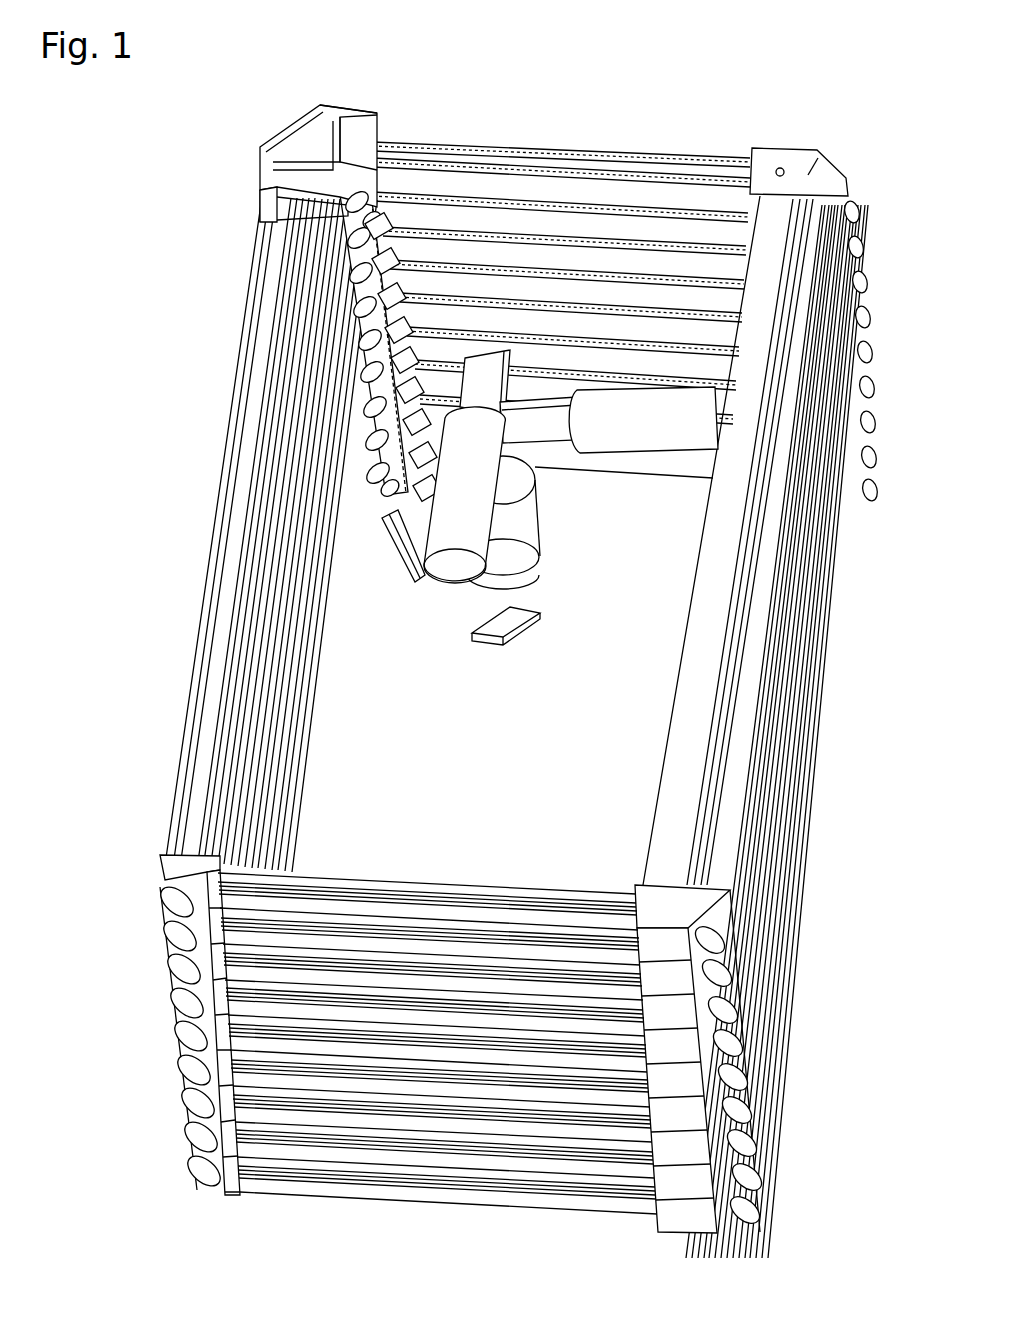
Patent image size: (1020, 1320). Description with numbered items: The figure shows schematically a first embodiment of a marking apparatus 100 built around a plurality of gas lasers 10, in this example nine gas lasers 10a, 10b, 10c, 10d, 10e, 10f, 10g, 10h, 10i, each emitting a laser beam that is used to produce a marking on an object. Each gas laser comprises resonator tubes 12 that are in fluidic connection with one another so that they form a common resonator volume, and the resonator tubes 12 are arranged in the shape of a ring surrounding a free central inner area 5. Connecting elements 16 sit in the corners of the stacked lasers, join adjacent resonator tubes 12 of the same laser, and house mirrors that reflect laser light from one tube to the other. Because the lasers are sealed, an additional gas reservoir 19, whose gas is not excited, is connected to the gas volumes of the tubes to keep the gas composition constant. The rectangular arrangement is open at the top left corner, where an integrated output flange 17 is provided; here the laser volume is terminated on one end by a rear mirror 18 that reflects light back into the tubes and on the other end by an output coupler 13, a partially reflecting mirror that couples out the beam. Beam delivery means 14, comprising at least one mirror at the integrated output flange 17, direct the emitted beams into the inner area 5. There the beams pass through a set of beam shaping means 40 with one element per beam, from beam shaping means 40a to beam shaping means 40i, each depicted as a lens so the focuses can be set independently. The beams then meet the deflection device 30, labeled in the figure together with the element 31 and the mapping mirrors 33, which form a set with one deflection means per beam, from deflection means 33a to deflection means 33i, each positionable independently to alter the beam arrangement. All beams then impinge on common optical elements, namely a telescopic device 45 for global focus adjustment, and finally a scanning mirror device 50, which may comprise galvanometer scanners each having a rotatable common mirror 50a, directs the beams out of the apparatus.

The marking apparatus 100 is at (640, 100).
The inner area 5 is at (494, 748).
The gas lasers 10 is at (389, 1051).
The gas laser 10a is at (153, 903).
The gas laser 10b is at (155, 936).
The gas laser 10c is at (165, 969).
The gas laser 10d is at (165, 1003).
The gas laser 10e is at (167, 1036).
The gas laser 10f is at (170, 1070).
The gas laser 10g is at (170, 1103).
The gas laser 10h is at (172, 1137).
The gas laser 10i is at (428, 1189).
The resonator tubes 12 is at (290, 1188).
The output coupler 13 is at (273, 190).
The beam delivery means 14 is at (311, 119).
The connecting elements 16 is at (817, 148).
The integrated output flange 17 is at (341, 95).
The rear mirror 18 is at (372, 108).
The gas reservoir 19 is at (700, 692).
The deflection device 30 is at (444, 294).
The contact pad 31 is at (444, 294).
The mapping mirrors 33 is at (381, 203).
The deflection means 33a is at (370, 250).
The deflection means 33i is at (372, 478).
The beam shaping means 40 is at (369, 524).
The beam shaping means 40a is at (360, 207).
The beam shaping means 40i is at (372, 492).
The telescopic device 45 is at (512, 530).
The scanning mirror device 50 is at (476, 508).
The common mirror 50a is at (478, 385).